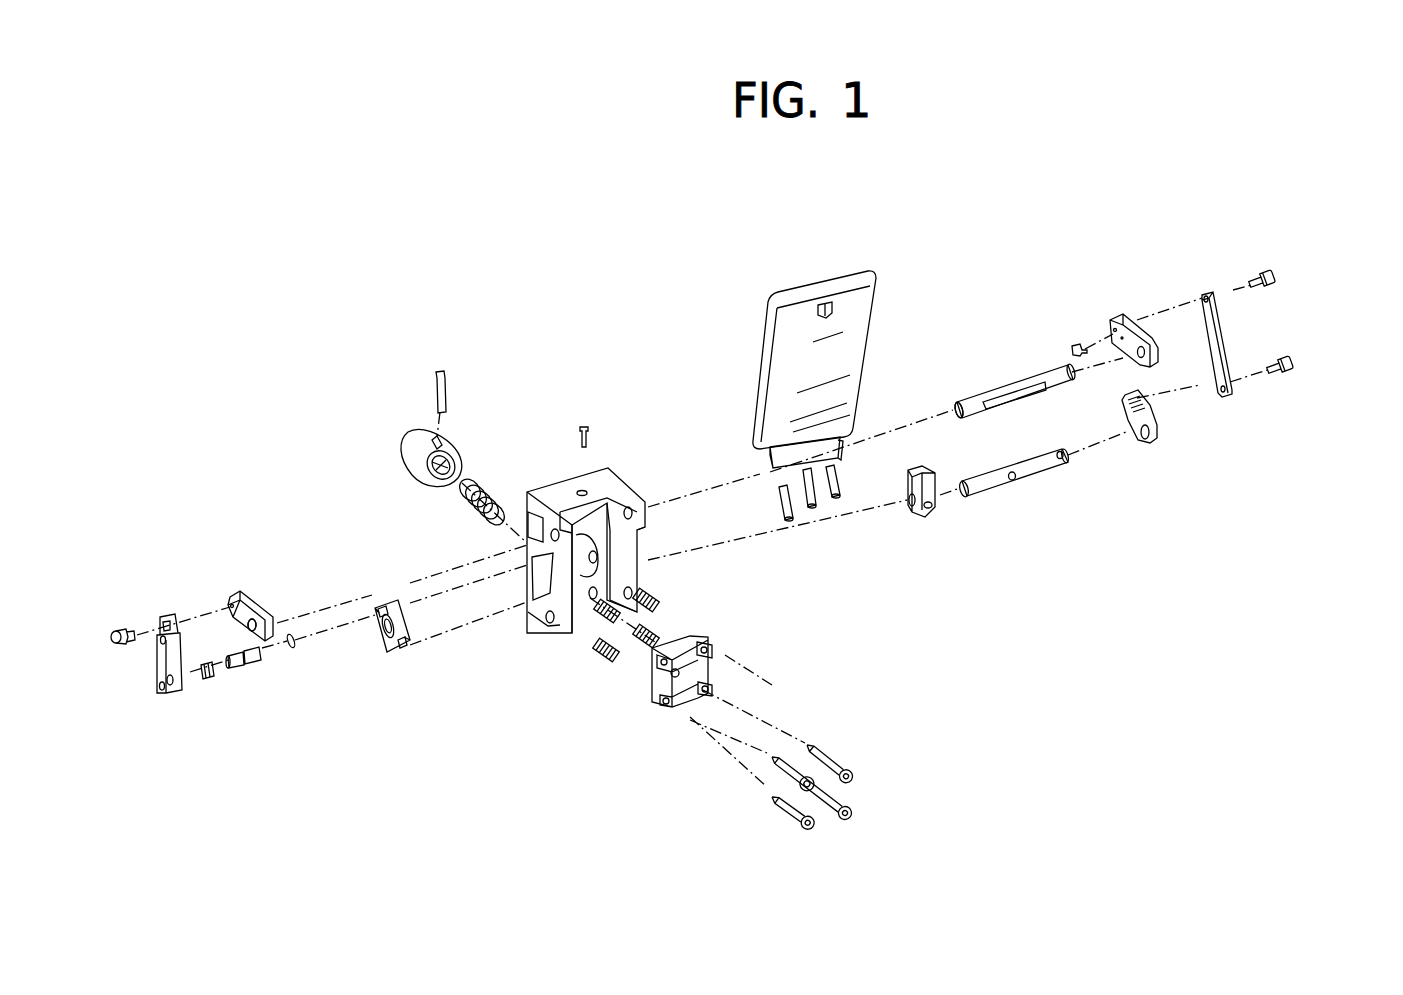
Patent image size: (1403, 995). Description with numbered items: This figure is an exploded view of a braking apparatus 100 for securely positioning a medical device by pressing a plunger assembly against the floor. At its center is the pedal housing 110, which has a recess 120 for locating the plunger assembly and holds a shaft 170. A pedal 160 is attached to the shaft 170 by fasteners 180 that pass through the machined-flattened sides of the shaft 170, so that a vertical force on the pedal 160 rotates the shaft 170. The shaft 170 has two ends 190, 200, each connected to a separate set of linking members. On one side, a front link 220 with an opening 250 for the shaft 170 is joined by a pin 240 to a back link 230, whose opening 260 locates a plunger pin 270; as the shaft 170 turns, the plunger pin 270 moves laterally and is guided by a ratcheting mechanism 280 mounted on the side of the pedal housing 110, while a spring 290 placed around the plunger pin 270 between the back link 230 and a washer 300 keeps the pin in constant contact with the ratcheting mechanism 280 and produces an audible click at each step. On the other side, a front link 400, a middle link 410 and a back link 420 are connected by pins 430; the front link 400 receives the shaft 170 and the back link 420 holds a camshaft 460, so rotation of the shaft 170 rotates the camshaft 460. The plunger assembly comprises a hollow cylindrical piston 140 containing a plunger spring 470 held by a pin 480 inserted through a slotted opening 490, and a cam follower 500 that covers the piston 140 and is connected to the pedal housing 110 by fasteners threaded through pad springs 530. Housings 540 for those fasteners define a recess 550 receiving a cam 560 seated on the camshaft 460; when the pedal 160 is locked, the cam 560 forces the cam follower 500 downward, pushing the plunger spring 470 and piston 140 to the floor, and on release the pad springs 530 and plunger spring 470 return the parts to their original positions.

The braking apparatus 100 is at (550, 282).
The pedal housing 110 is at (628, 478).
The recess 120 is at (587, 613).
The piston 140 is at (420, 460).
The pedal 160 is at (796, 320).
The shaft 170 is at (1000, 385).
The fasteners 180 is at (787, 520).
The end 190 is at (950, 407).
The end 200 is at (1075, 378).
The front link 220 is at (250, 598).
The back link 230 is at (160, 663).
The pin 240 is at (110, 633).
The opening 250 is at (267, 617).
The opening 260 is at (162, 688).
The plunger pin 270 is at (253, 660).
The ratcheting mechanism 280 is at (393, 655).
The spring 290 is at (208, 676).
The washer 300 is at (295, 645).
The front link 400 is at (1125, 315).
The middle link 410 is at (1212, 295).
The back link 420 is at (1147, 443).
The pins 430 is at (1291, 366).
The camshaft 460 is at (1028, 473).
The plunger spring 470 is at (493, 487).
The pin 480 is at (443, 378).
The slotted opening 490 is at (440, 437).
The cam follower 500 is at (710, 640).
The pad springs 530 is at (604, 663).
The housings 540 is at (665, 665).
The recess 550 is at (703, 670).
The cam 560 is at (927, 517).